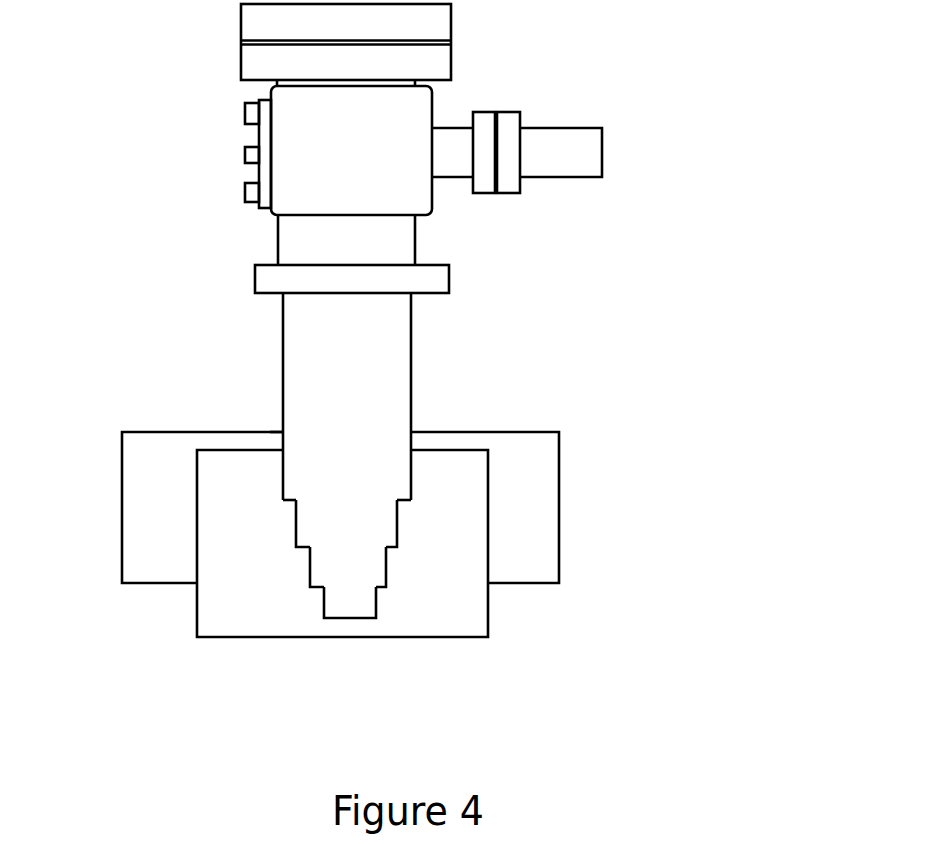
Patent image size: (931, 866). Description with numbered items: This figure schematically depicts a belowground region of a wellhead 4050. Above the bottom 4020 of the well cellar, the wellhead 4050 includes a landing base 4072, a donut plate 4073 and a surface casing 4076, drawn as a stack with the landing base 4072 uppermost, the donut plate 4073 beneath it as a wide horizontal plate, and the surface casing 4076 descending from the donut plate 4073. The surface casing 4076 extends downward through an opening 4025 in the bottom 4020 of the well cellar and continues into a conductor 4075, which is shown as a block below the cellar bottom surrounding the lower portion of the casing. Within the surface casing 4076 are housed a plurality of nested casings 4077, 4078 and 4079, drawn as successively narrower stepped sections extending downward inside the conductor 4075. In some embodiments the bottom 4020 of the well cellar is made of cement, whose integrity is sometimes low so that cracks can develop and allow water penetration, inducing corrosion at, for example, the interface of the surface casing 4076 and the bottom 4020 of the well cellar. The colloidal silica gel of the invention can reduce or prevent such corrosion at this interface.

The wellhead 4050 is at (647, 47).
The landing base 4072 is at (245, 115).
The donut plate 4073 is at (255, 280).
The surface casing 4076 is at (411, 353).
The nested casing 4077 is at (397, 519).
The nested casing 4078 is at (386, 567).
The nested casing 4079 is at (376, 603).
The bottom of the well cellar 4020 is at (560, 448).
The conductor 4075 is at (197, 622).
The opening 4025 is at (281, 430).